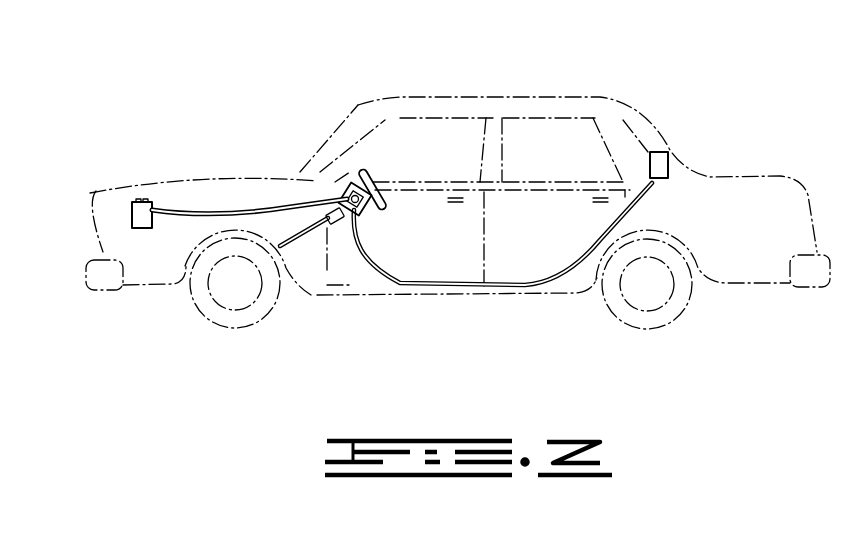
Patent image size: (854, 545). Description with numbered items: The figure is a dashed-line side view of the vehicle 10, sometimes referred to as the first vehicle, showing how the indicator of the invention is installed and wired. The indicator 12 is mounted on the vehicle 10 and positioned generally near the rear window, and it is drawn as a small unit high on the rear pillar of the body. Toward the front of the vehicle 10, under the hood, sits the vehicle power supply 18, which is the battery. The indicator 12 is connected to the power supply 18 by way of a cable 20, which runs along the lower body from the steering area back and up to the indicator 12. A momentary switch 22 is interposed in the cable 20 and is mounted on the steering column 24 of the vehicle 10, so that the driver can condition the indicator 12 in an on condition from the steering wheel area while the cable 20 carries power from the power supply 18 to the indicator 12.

The vehicle 10 is at (586, 98).
The indicator 12 is at (661, 150).
The vehicle power supply 18 is at (132, 213).
The cable 20 is at (413, 285).
The momentary switch 22 is at (348, 207).
The steering column 24 is at (327, 222).